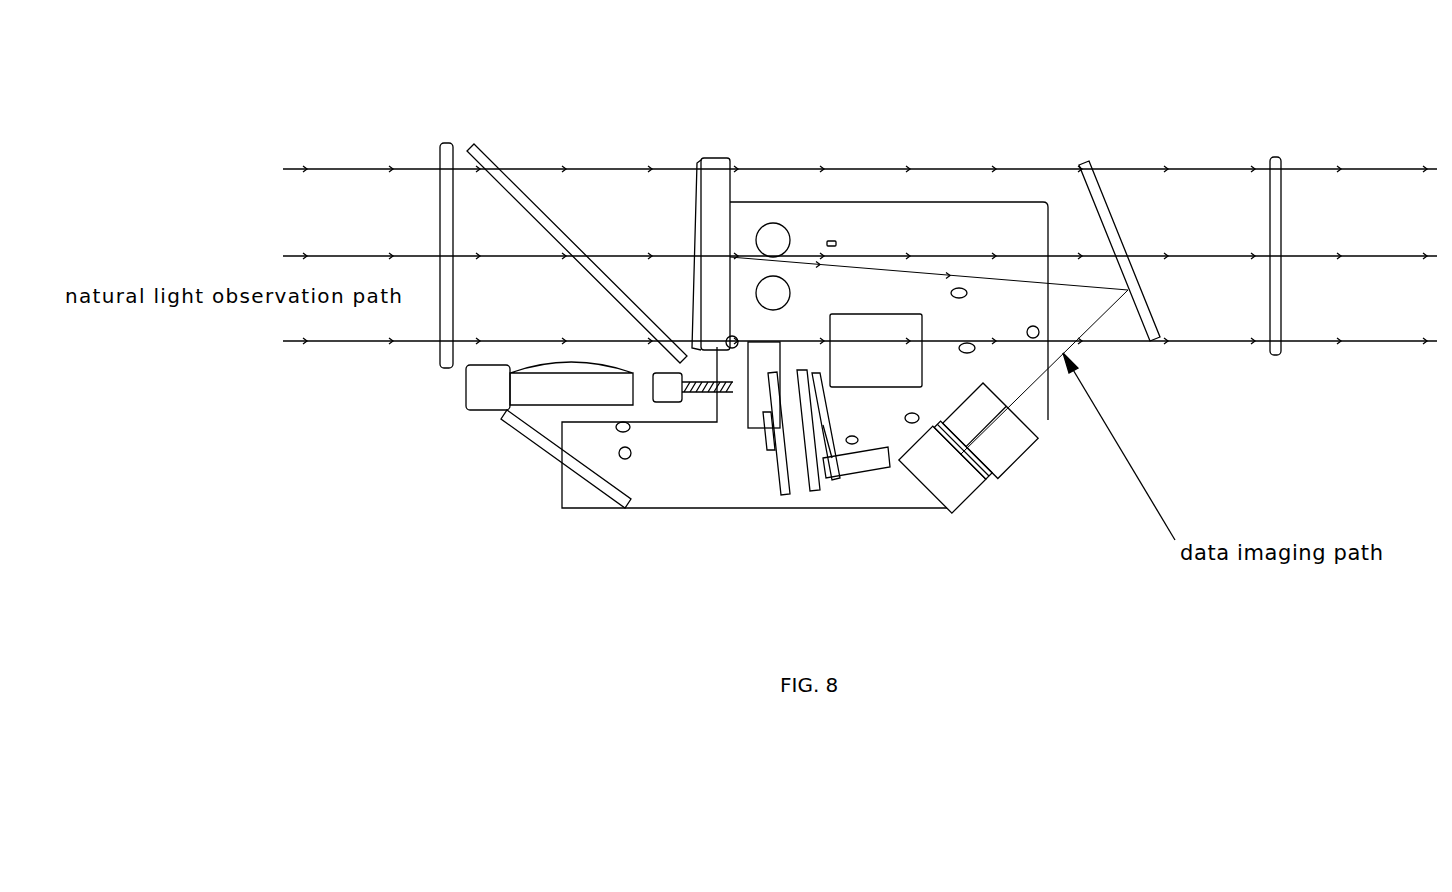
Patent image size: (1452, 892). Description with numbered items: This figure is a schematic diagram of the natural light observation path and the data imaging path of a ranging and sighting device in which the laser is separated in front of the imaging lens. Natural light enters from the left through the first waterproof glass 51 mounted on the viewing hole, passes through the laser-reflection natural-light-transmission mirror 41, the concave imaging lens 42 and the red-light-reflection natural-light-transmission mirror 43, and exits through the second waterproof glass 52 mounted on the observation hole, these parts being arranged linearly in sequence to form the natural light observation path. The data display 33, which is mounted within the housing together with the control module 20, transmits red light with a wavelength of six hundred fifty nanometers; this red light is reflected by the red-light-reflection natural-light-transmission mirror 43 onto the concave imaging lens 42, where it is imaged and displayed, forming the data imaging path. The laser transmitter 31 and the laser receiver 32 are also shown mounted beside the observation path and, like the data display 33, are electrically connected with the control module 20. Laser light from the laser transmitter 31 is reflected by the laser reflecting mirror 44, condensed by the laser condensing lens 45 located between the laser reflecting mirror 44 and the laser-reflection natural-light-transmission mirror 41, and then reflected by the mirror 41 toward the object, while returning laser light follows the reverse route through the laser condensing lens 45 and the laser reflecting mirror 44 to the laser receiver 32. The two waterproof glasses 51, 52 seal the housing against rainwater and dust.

The control module 20 is at (890, 225).
The laser transmitter 31 is at (838, 455).
The laser receiver 32 is at (782, 470).
The data display 33 is at (990, 480).
The laser-reflection natural-light-transmission mirror 41 is at (523, 197).
The concave imaging lens 42 is at (717, 158).
The red-light-reflection natural-light-transmission mirror 43 is at (1147, 317).
The laser reflecting mirror 44 is at (527, 435).
The laser condensing lens 45 is at (533, 385).
The first waterproof glass 51 is at (440, 145).
The second waterproof glass 52 is at (1273, 157).